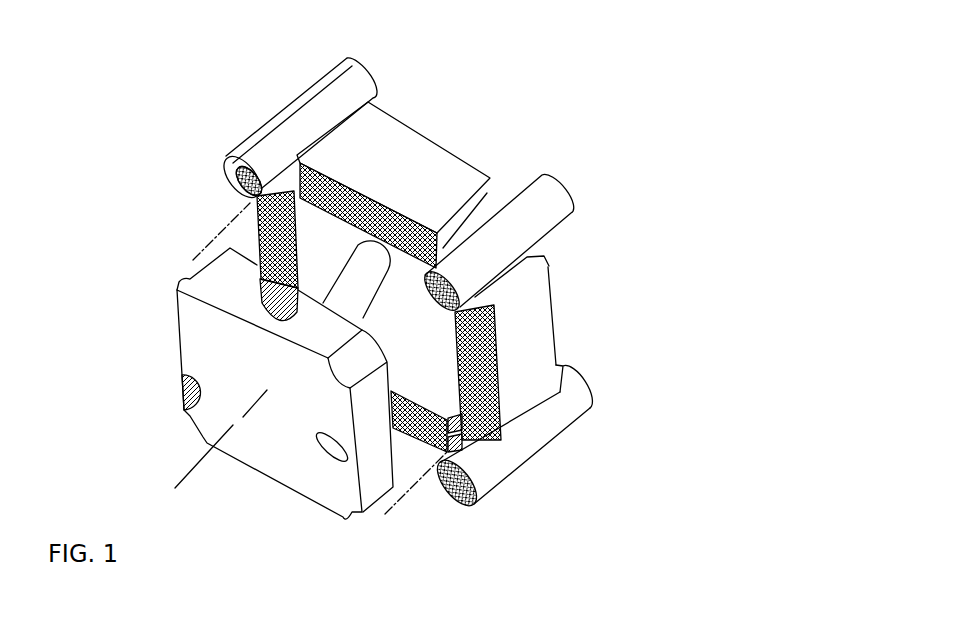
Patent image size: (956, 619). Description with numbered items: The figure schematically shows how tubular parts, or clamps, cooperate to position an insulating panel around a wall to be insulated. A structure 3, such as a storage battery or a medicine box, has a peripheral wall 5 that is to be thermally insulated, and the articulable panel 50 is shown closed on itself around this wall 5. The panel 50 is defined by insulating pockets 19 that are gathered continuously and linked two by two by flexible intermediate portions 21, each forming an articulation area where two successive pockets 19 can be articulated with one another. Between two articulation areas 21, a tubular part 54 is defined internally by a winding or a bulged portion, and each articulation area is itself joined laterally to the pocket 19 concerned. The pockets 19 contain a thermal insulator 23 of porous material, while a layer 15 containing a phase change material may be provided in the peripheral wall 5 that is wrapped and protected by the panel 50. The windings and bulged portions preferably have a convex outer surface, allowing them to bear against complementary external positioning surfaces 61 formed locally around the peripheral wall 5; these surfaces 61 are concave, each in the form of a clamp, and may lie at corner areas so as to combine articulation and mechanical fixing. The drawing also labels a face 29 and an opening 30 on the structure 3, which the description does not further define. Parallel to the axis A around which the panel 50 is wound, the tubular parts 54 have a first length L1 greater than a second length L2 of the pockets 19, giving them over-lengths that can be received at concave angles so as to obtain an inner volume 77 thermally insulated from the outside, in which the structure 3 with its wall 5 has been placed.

The structure 3 is at (186, 360).
The peripheral wall 5 is at (238, 273).
The layer containing a PCM 15 is at (262, 295).
The insulating pocket 19 is at (392, 140).
The flexible intermediate portion 21 is at (490, 186).
The thermal insulator 23 is at (250, 218).
The contact surface 29 is at (270, 457).
The hole 30 is at (333, 447).
The articulable panel 50 is at (278, 89).
The tubular part 54 is at (245, 140).
The external positioning surface 61 is at (177, 283).
The inner volume 77 is at (440, 362).
The axis A is at (497, 160).
The first length L1 is at (548, 186).
The second length L2 is at (414, 147).